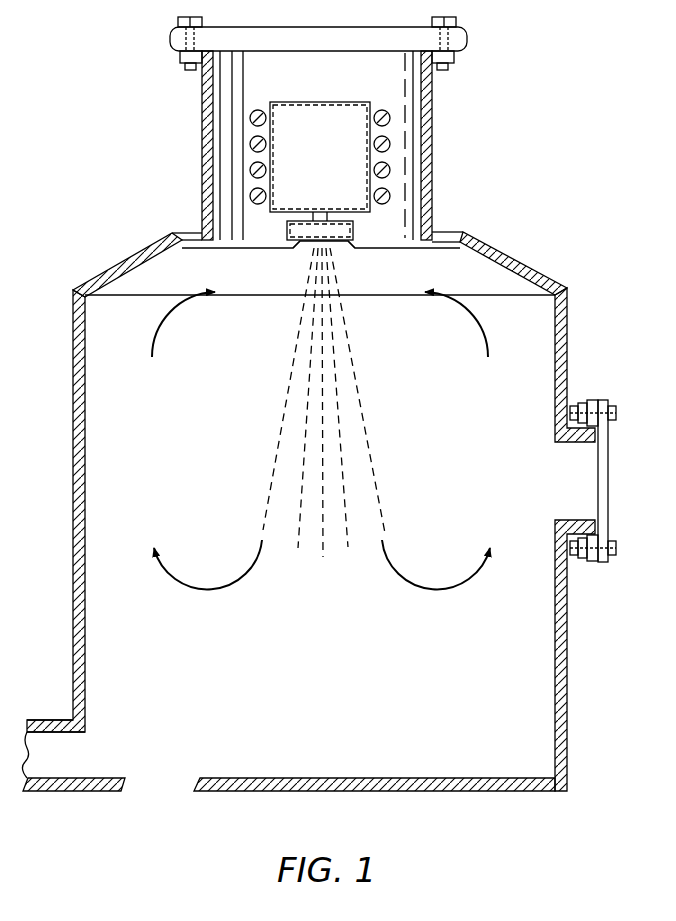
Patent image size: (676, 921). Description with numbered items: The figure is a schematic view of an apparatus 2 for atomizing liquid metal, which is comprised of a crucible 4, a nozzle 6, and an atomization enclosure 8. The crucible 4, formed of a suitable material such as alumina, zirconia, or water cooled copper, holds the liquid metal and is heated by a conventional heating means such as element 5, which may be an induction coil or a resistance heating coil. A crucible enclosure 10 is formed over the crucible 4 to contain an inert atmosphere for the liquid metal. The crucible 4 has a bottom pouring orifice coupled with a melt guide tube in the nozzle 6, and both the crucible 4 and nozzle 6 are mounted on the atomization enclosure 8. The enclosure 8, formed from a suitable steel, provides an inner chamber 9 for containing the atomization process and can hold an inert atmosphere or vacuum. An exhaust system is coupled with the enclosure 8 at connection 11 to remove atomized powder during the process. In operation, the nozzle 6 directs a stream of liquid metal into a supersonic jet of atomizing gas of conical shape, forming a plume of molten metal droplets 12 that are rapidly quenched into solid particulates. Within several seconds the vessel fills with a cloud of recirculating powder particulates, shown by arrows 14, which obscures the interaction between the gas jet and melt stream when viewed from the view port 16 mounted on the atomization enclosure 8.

The apparatus 2 is at (150, 131).
The crucible 4 is at (371, 104).
The heating element 5 is at (262, 114).
The nozzle 6 is at (353, 233).
The atomization enclosure 8 is at (567, 338).
The inner chamber 9 is at (189, 468).
The crucible enclosure 10 is at (433, 128).
The connection 11 is at (56, 720).
The plume of molten metal droplets 12 is at (328, 252).
The arrows 14 is at (149, 348).
The view port 16 is at (604, 488).